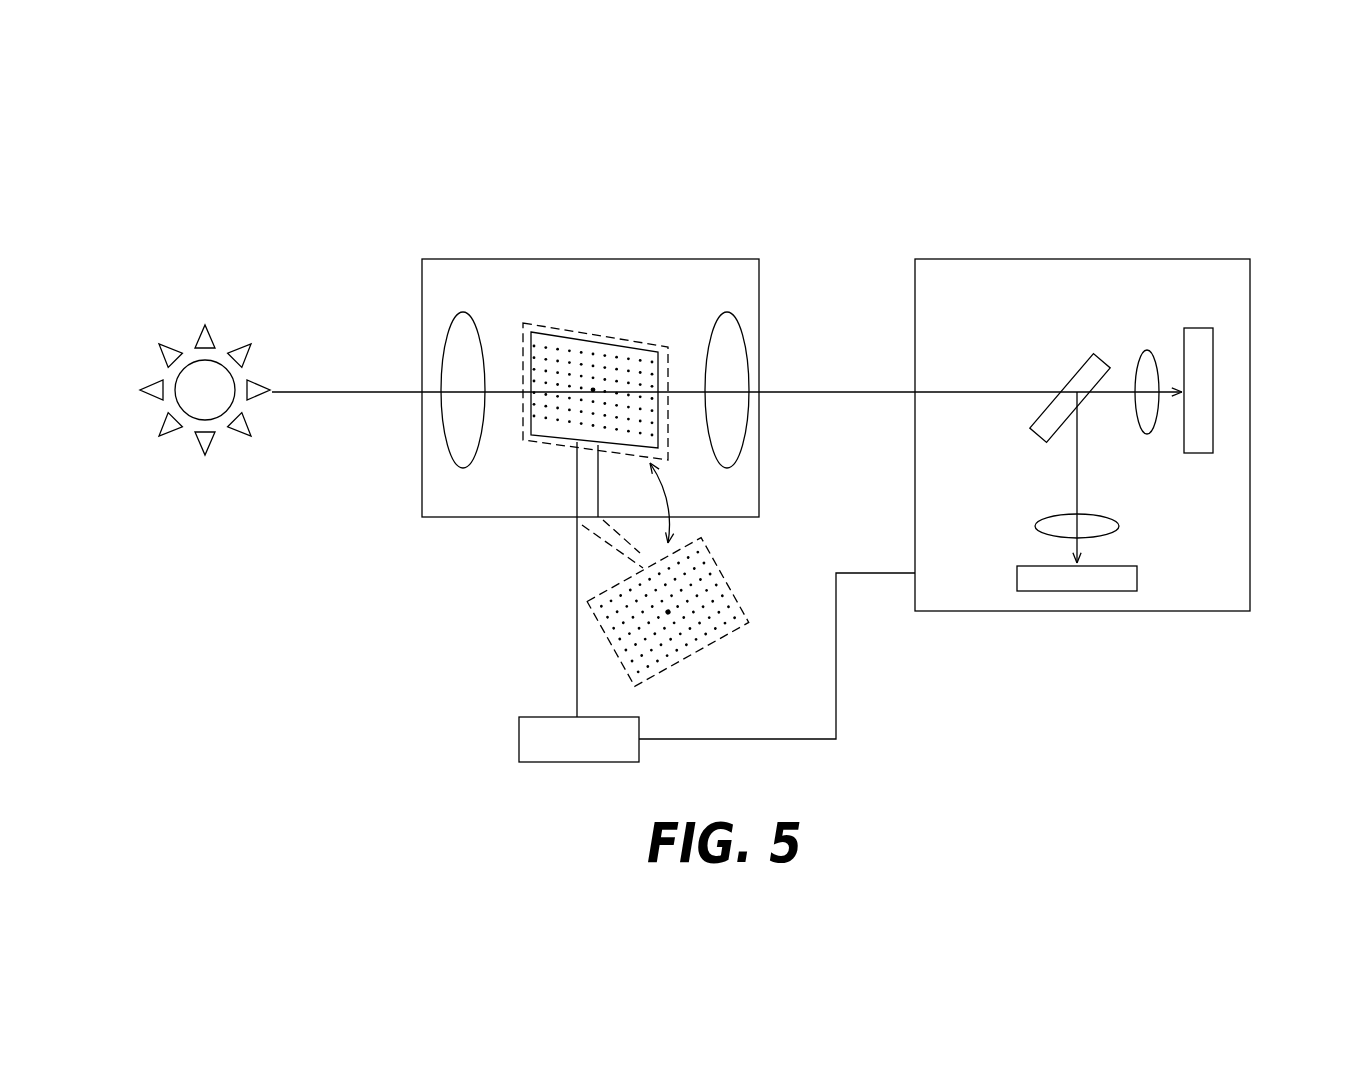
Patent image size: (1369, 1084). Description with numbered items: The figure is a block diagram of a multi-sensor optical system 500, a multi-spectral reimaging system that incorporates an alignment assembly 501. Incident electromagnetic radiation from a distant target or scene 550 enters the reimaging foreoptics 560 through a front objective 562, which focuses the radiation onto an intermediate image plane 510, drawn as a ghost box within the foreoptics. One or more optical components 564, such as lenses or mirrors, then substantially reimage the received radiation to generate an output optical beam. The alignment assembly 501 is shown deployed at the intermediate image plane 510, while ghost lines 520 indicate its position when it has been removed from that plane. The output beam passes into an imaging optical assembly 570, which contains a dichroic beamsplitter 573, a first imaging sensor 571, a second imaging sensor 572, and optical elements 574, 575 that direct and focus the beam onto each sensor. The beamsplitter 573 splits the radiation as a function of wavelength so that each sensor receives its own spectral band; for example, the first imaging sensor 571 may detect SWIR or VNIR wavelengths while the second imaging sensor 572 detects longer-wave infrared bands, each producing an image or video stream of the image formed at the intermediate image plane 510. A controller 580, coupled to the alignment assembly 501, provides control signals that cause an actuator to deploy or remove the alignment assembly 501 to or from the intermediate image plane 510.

The multi-sensor optical system 500 is at (335, 242).
The alignment assembly 501 is at (648, 345).
The intermediate image plane 510 is at (543, 440).
The ghost lines 520 is at (723, 580).
The scene 550 is at (197, 360).
The reimaging foreoptics 560 is at (517, 257).
The front objective 562 is at (440, 355).
The optical components 564 is at (747, 360).
The imaging optical assembly 570 is at (1060, 258).
The first imaging sensor 571 is at (1208, 330).
The second imaging sensor 572 is at (1105, 591).
The dichroic beamsplitter 573 is at (1073, 373).
The optical element 574 is at (1036, 526).
The optical element 575 is at (1147, 432).
The controller 580 is at (532, 717).